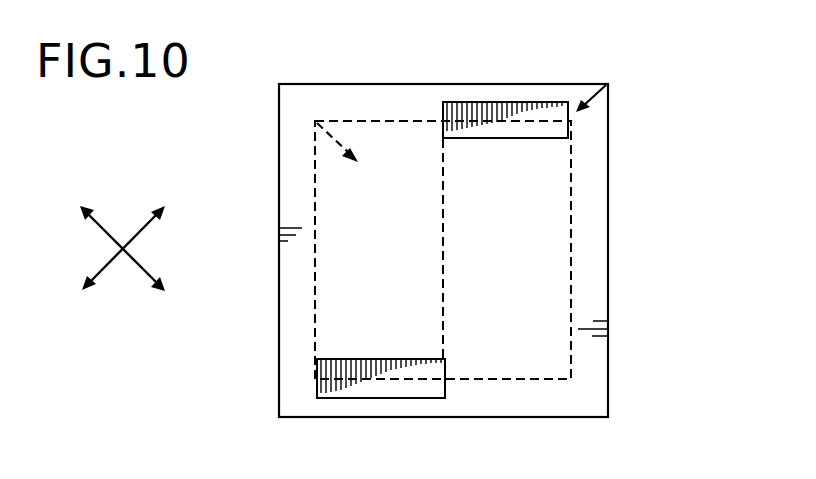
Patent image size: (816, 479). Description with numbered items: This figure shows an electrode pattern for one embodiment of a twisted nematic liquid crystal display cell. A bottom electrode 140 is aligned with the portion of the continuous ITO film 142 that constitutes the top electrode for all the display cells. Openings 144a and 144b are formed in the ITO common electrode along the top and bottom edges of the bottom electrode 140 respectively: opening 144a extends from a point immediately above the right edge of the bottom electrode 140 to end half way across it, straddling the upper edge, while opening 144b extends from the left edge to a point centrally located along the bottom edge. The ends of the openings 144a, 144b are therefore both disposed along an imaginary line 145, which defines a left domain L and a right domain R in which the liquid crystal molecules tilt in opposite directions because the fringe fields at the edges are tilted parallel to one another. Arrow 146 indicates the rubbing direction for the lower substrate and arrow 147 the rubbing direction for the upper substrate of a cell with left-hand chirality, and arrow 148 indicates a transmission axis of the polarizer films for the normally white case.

The bottom electrode 140 is at (572, 222).
The continuous ITO film 142 is at (610, 173).
The opening 144a is at (512, 110).
The opening 144b is at (377, 388).
The imaginary line 145 is at (443, 262).
The arrow 146 is at (346, 152).
The arrow 147 is at (595, 98).
The arrow 148 is at (142, 267).